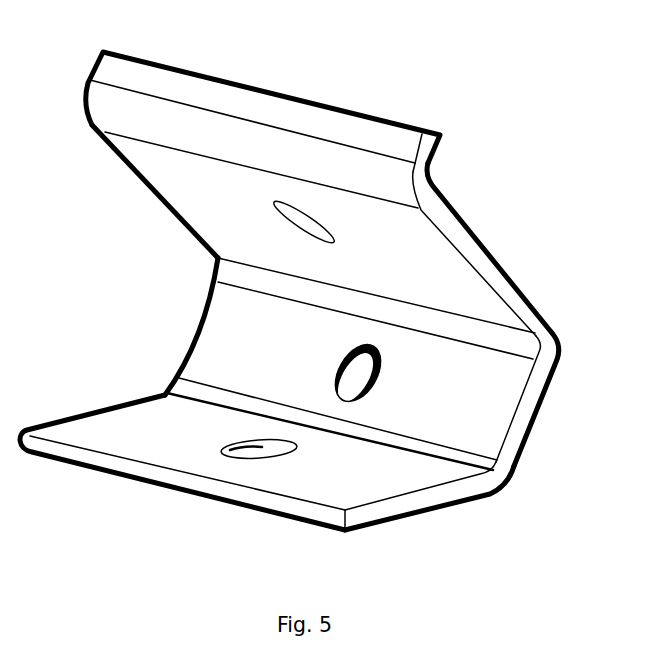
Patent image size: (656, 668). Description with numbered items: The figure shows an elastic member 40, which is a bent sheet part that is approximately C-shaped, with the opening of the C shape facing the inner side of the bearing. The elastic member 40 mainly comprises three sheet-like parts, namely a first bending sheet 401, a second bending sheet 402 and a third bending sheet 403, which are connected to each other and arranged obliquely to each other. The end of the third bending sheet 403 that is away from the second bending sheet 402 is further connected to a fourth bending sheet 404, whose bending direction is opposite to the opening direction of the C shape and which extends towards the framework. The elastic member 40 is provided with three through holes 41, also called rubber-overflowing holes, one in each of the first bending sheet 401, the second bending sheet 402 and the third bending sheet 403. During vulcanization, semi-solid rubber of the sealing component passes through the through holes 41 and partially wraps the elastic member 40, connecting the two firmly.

The elastic member 40 is at (303, 66).
The first bending sheet 401 is at (408, 517).
The second bending sheet 402 is at (525, 420).
The third bending sheet 403 is at (470, 251).
The fourth bending sheet 404 is at (378, 136).
The through hole 41 is at (307, 227).